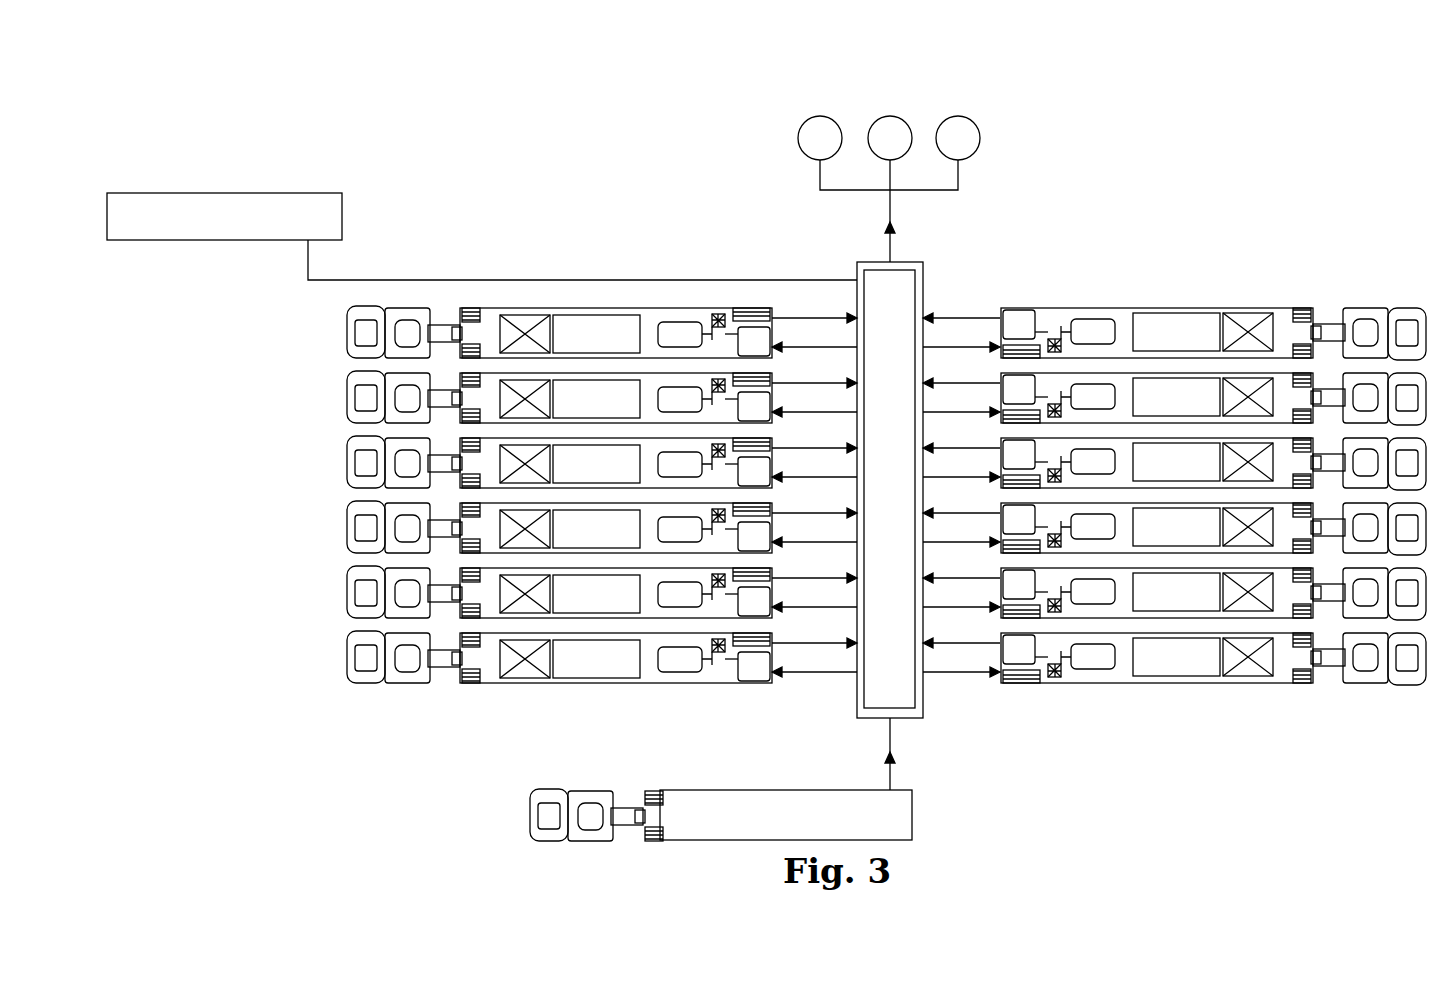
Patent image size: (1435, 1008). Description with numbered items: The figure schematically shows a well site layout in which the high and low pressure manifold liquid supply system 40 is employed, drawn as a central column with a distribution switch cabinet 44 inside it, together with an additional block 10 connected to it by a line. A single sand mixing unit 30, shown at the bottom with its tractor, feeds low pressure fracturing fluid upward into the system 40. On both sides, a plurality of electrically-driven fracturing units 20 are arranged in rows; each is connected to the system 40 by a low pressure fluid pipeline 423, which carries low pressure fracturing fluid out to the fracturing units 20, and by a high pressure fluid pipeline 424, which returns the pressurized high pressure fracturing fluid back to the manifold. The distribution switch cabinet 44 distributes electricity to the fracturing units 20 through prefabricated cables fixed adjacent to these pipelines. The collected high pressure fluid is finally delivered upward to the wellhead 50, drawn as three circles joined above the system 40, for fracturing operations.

The mining management server 10 is at (212, 193).
The electrically-driven fracturing units 20 is at (552, 684).
The sand mixing unit 30 is at (722, 790).
The high and low pressure manifold liquid supply system 40 is at (928, 291).
The distribution switch cabinet 44 is at (904, 268).
The wellhead 50 is at (888, 117).
The low pressure fluid pipeline 423 is at (947, 673).
The high pressure fluid pipeline 424 is at (968, 645).